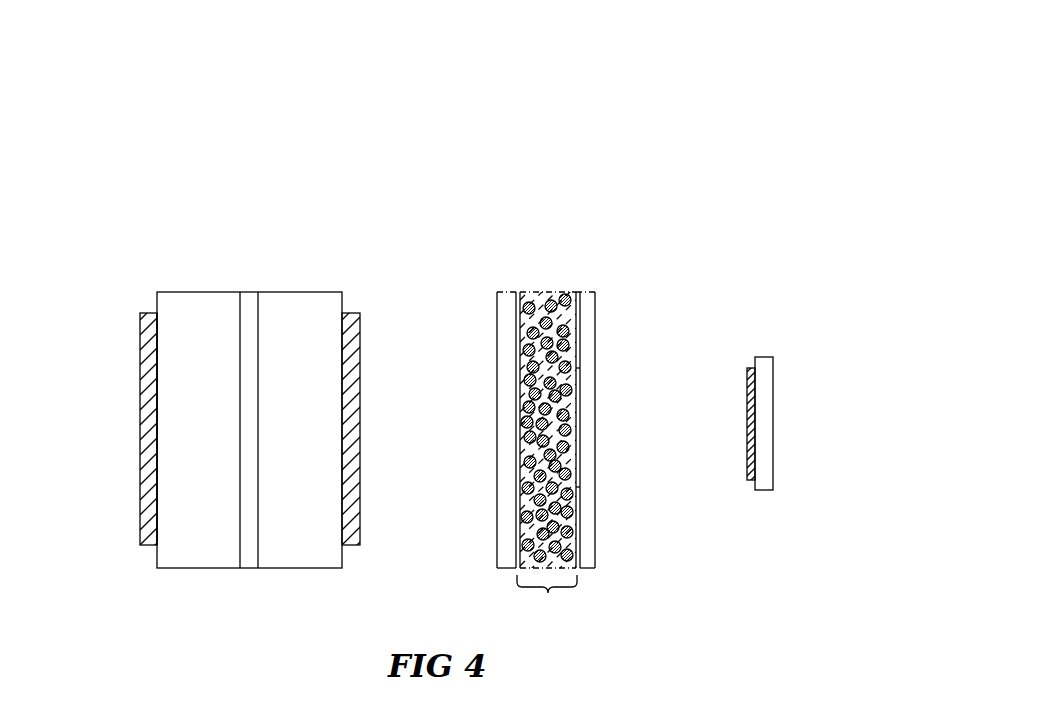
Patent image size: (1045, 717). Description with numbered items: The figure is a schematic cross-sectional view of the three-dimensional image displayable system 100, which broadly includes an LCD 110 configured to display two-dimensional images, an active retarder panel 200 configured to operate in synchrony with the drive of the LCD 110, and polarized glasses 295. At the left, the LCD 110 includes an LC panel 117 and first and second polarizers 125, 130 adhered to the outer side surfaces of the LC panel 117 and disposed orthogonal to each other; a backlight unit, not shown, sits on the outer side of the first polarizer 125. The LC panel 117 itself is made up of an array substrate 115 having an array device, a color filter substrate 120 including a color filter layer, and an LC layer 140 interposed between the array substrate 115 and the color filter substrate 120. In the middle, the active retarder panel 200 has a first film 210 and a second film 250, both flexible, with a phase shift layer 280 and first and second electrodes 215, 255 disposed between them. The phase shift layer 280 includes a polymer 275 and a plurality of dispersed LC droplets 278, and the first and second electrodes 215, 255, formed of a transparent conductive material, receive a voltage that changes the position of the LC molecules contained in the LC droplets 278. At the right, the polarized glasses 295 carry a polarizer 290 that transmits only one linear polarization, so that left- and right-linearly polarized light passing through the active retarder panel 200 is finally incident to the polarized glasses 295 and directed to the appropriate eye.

The 3D image displayable system 100 is at (745, 96).
The LCD 110 is at (314, 248).
The array substrate 115 is at (168, 417).
The LC panel 117 is at (76, 413).
The color filter substrate 120 is at (287, 443).
The first polarizer 125 is at (148, 382).
The second polarizer 130 is at (352, 410).
The LC layer 140 is at (247, 305).
The active retarder panel 200 is at (626, 161).
The first film 210 is at (593, 295).
The first electrode 215 is at (578, 293).
The second film 250 is at (505, 300).
The second electrode 255 is at (517, 298).
The polymer 275 is at (533, 298).
The LC droplets 278 is at (550, 298).
The phase shift layer 280 is at (547, 595).
The polarizer 290 is at (749, 370).
The polarized glasses 295 is at (763, 372).